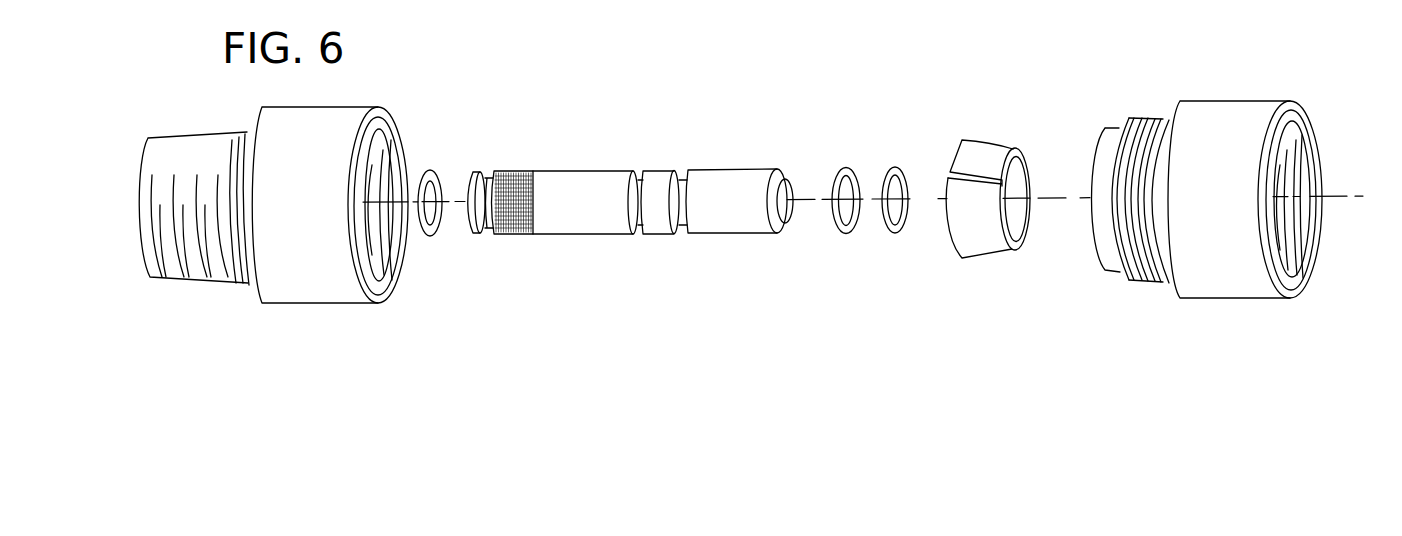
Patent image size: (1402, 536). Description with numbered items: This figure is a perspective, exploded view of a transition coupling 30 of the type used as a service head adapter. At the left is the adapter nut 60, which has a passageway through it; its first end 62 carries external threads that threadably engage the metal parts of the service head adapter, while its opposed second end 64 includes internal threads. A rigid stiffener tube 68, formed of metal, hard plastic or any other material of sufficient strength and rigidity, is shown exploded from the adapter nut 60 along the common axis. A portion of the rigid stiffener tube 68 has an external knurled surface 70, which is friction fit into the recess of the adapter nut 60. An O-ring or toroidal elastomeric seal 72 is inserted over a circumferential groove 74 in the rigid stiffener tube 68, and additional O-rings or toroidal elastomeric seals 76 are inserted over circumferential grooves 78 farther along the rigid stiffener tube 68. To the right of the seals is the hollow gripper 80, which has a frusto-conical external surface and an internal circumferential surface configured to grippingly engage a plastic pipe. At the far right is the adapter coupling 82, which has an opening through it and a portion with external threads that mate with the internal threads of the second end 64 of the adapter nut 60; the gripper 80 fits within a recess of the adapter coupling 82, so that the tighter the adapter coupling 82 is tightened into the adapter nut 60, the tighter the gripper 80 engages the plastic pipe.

The transition coupling 30 is at (462, 108).
The adapter nut 60 is at (323, 288).
The first end 62 is at (141, 203).
The second end 64 is at (383, 145).
The rigid stiffener tube 68 is at (588, 219).
The external knurled surface 70 is at (512, 233).
The O-ring or toroidal elastomeric seal 72 is at (428, 173).
The circumferential groove 74 is at (487, 185).
The O-rings or toroidal elastomeric seals 76 is at (843, 163).
The circumferential grooves 78 is at (636, 181).
The hollow gripper 80 is at (987, 158).
The adapter coupling 82 is at (1230, 112).